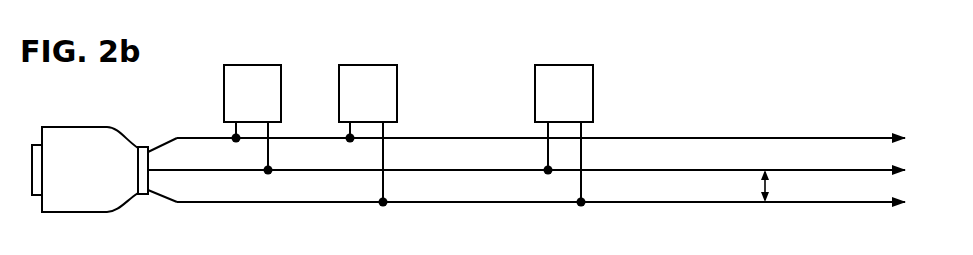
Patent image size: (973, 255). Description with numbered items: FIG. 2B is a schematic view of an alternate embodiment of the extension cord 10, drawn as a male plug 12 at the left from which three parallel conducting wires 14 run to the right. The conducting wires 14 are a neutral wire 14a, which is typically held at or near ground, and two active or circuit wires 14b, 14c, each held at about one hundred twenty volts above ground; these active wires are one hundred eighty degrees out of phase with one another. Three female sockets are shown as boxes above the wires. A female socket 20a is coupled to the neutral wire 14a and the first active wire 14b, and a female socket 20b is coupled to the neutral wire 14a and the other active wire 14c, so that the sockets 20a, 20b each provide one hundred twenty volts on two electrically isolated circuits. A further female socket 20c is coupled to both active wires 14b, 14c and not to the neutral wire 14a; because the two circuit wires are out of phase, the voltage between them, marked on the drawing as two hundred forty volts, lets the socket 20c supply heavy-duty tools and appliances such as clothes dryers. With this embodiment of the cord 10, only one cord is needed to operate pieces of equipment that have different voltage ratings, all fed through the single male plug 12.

The extension cord 10 is at (728, 133).
The male plug 12 is at (72, 127).
The conducting wires 14 is at (802, 137).
The neutral wire 14a is at (564, 138).
The first active wire 14b is at (549, 170).
The second active wire 14c is at (563, 202).
The female socket 20a is at (257, 65).
The female socket 20b is at (372, 65).
The 240 volt female socket 20c is at (567, 65).